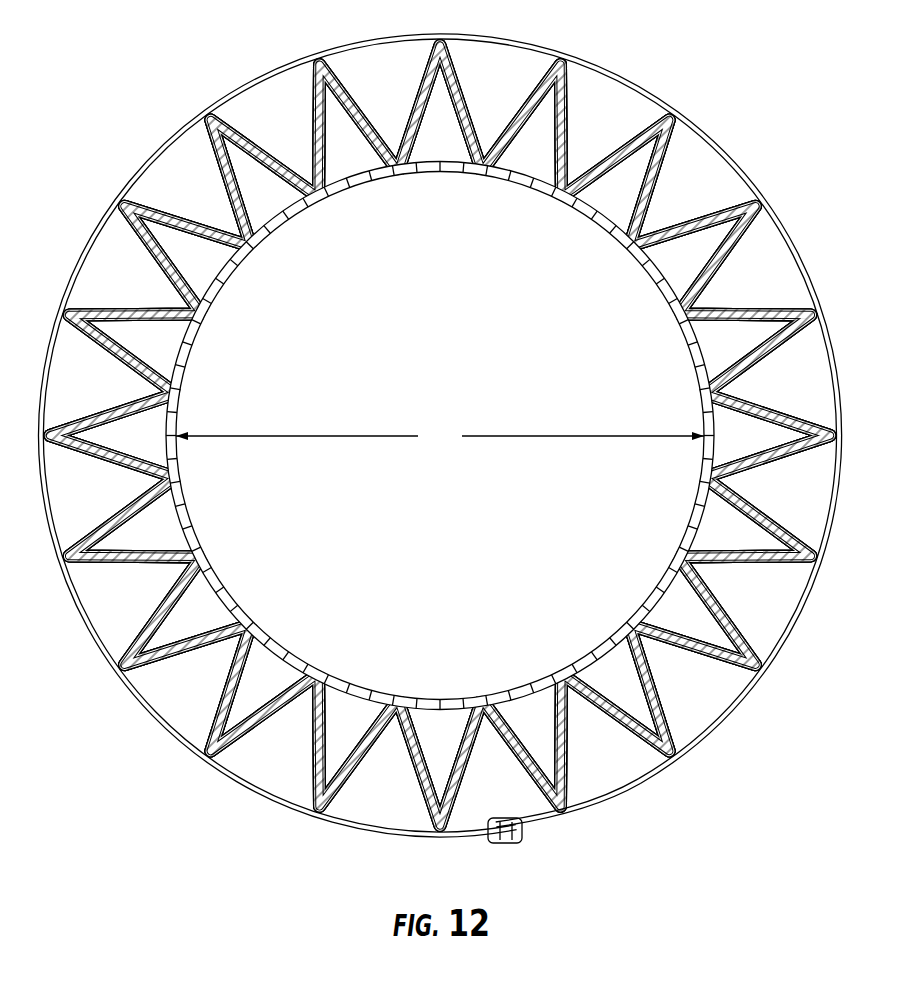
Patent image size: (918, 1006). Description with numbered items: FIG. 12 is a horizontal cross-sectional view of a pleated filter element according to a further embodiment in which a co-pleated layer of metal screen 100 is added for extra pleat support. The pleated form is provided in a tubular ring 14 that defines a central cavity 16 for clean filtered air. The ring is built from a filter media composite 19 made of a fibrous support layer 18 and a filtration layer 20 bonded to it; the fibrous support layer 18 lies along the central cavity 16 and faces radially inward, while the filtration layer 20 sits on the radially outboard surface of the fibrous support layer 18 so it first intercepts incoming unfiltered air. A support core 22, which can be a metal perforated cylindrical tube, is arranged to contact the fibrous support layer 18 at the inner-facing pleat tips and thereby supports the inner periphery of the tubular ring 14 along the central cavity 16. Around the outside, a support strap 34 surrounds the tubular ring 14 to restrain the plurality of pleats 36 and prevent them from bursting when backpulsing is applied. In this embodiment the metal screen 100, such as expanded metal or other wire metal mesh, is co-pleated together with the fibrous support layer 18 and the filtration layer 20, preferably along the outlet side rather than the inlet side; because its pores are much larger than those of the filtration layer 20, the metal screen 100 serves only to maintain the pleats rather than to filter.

The tubular ring 14 is at (448, 442).
The central cavity 16 is at (440, 437).
The fibrous support layer 18 is at (640, 703).
The filter media composite 19 is at (768, 572).
The filtration layer 20 is at (633, 707).
The support core 22 is at (280, 642).
The support strap 34 is at (543, 826).
The pleats 36 is at (568, 72).
The metal screen 100 is at (476, 745).